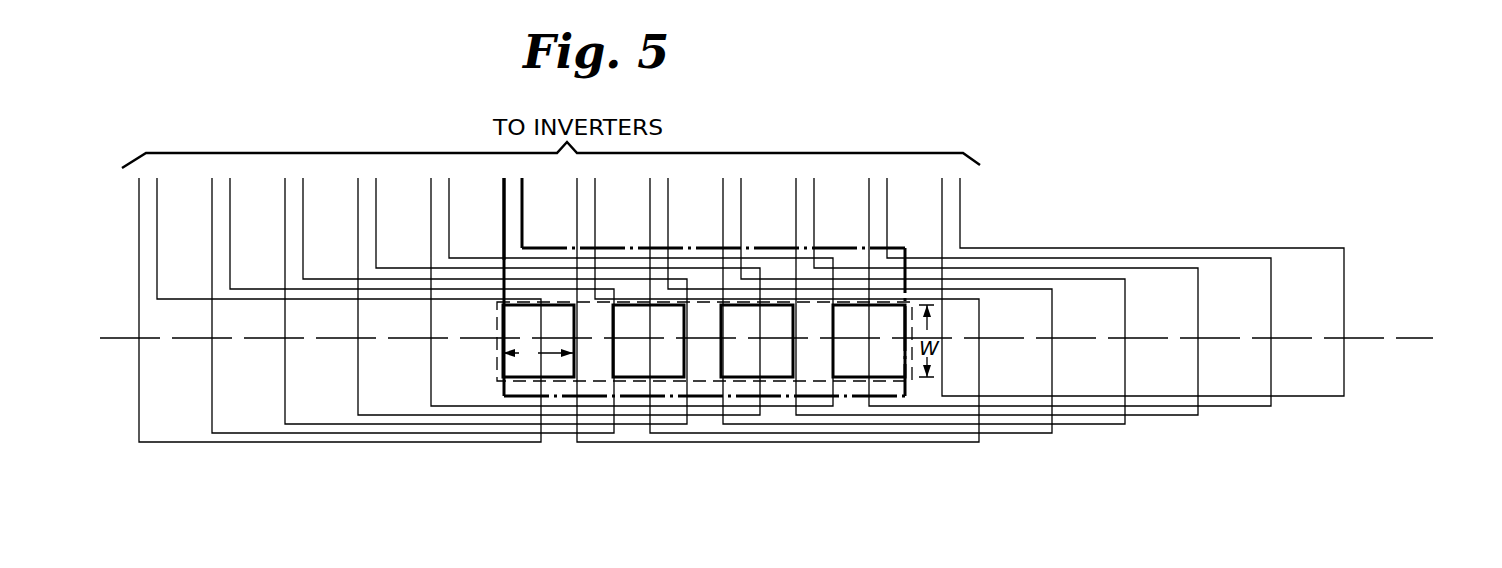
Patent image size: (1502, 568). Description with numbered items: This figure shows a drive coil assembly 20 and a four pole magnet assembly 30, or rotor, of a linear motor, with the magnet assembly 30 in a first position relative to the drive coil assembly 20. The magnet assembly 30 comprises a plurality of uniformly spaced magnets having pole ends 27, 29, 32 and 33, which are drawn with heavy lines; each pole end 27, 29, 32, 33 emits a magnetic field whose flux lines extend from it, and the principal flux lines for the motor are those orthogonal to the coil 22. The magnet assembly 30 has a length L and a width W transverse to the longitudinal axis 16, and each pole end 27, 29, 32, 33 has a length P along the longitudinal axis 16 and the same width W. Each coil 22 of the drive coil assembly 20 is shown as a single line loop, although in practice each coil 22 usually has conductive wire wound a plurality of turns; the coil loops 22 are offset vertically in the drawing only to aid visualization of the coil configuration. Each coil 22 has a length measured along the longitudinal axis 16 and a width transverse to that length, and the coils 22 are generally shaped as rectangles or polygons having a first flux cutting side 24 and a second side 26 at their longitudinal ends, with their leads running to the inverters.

The longitudinal axis 16 is at (1403, 335).
The drive coil assembly 20 is at (1134, 209).
The coil 22 is at (503, 199).
The first flux cutting side 24 is at (906, 268).
The second side 26 is at (503, 250).
The pole end 27 is at (522, 378).
The pole end 29 is at (637, 378).
The magnet assembly 30 is at (488, 308).
The pole end 32 is at (772, 378).
The pole end 33 is at (852, 378).